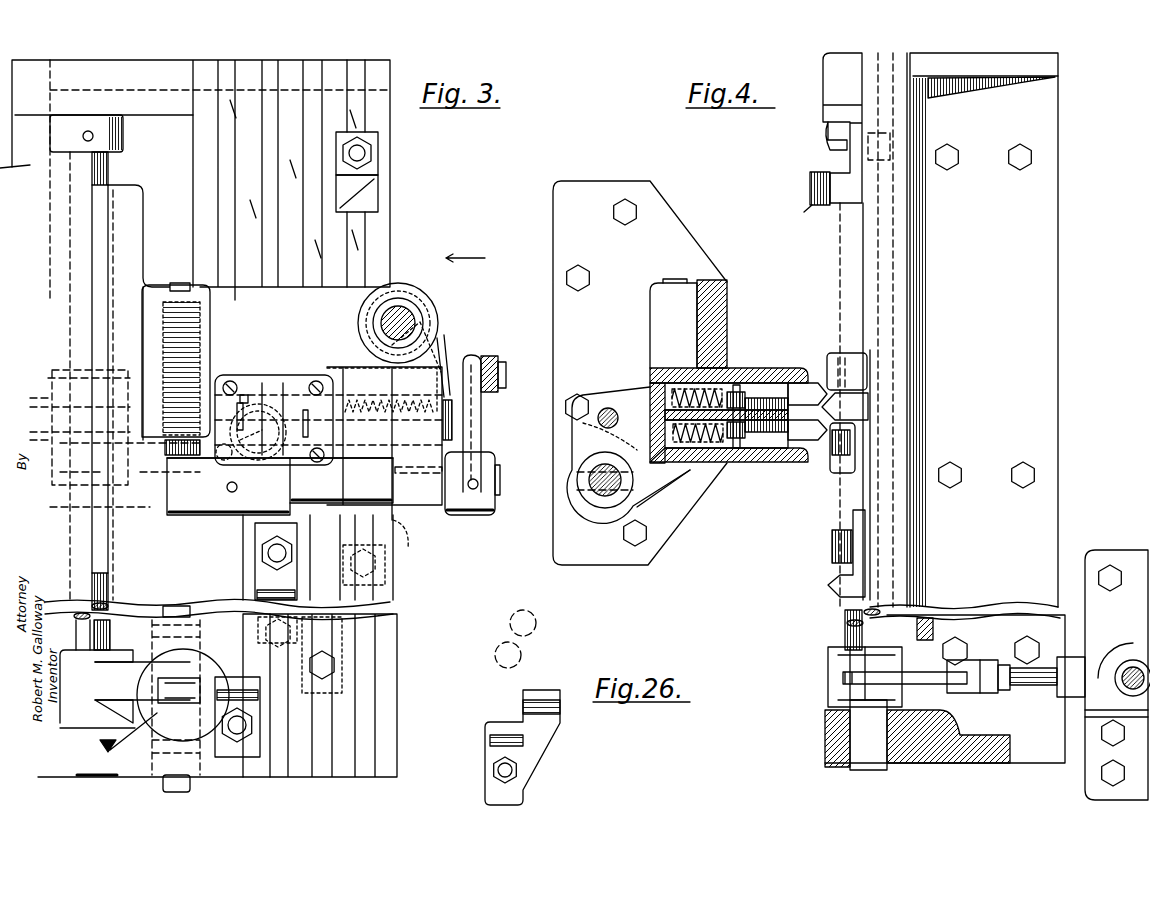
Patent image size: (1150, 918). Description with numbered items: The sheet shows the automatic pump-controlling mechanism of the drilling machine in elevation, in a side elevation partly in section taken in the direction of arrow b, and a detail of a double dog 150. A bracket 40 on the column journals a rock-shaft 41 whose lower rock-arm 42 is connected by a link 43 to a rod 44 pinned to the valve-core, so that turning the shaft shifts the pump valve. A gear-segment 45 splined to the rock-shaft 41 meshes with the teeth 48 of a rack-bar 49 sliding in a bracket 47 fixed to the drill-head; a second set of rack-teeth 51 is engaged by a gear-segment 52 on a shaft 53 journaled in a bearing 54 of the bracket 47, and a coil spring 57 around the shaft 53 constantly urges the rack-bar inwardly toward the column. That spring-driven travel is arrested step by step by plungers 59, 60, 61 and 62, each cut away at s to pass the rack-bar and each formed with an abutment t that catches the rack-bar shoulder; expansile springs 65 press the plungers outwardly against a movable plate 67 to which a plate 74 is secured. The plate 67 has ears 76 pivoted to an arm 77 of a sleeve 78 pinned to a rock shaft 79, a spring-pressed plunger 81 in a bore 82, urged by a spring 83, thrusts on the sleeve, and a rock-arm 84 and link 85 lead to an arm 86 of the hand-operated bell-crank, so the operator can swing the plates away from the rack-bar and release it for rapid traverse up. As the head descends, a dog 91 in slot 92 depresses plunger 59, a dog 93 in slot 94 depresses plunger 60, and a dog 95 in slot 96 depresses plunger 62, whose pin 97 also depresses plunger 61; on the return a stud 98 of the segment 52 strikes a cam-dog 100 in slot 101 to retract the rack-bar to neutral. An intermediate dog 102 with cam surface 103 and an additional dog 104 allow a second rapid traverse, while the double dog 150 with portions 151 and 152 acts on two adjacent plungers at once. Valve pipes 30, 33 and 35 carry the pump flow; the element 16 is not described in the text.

In FIG. 3, the bracket 40 is at (391, 134).
In FIG. 4, the bracket 40 is at (965, 336).
In FIG. 3, the rock-shaft 41 is at (110, 172).
In FIG. 4, the rock-shaft 41 is at (845, 628).
In FIG. 3, the rock-arm 42 is at (125, 689).
In FIG. 4, the rock-arm 42 is at (830, 690).
In FIG. 4, the link 43 is at (958, 694).
In FIG. 4, the rod 44 is at (1037, 688).
In FIG. 3, the gear-segment 45 is at (52, 398).
In FIG. 4, the gear-segment 45 is at (827, 428).
In FIG. 3, the bracket 47 is at (197, 312).
In FIG. 4, the bracket 47 is at (704, 258).
In FIG. 4, the teeth 48 is at (766, 400).
In FIG. 3, the rack-bar 49 is at (483, 425).
In FIG. 3, the rack-teeth 51 is at (389, 443).
In FIG. 3, the gear-segment 52 is at (447, 372).
In FIG. 3, the shaft 53 is at (420, 318).
In FIG. 3, the bearing 54 is at (405, 322).
In FIG. 3, the coil spring 57 is at (430, 322).
In FIG. 3, the plunger 59 is at (297, 360).
In FIG. 4, the plunger 59 is at (807, 394).
In FIG. 26, the plunger 59 is at (537, 623).
In FIG. 3, the plunger 60 is at (263, 462).
In FIG. 4, the plunger 60 is at (807, 430).
In FIG. 3, the plunger 61 is at (268, 360).
In FIG. 3, the plunger 62 is at (222, 462).
In FIG. 4, the expansile springs 65 is at (746, 398).
In FIG. 3, the movable plate 67 is at (283, 372).
In FIG. 4, the movable plate 67 is at (650, 385).
In FIG. 4, the plate 74 is at (681, 369).
In FIG. 3, the ears 76 is at (240, 399).
In FIG. 4, the ears 76 is at (621, 409).
In FIG. 3, the arm 77 is at (260, 468).
In FIG. 4, the arm 77 is at (588, 443).
In FIG. 3, the sleeve 78 is at (228, 497).
In FIG. 4, the sleeve 78 is at (608, 508).
In FIG. 3, the rock shaft 79 is at (341, 480).
In FIG. 3, the spring-pressed plunger 81 is at (166, 450).
In FIG. 4, the spring-pressed plunger 81 is at (684, 281).
In FIG. 3, the bore 82 is at (195, 333).
In FIG. 3, the spring 83 is at (197, 310).
In FIG. 3, the rock-arm 84 is at (495, 450).
In FIG. 3, the link 85 is at (496, 385).
In FIG. 3, the arm 86 is at (197, 488).
In FIG. 4, the arm 86 is at (662, 493).
In FIG. 4, the dog 91 is at (845, 406).
In FIG. 3, the slot 92 is at (325, 707).
In FIG. 3, the dog 93 is at (258, 583).
In FIG. 4, the dog 93 is at (828, 592).
In FIG. 3, the slot 94 is at (283, 770).
In FIG. 3, the dog 95 is at (213, 692).
In FIG. 3, the slot 96 is at (237, 770).
In FIG. 3, the pin 97 is at (237, 417).
In FIG. 3, the slot 16 is at (308, 437).
In FIG. 3, the stud 98 is at (355, 372).
In FIG. 3, the cam-dog 100 is at (379, 199).
In FIG. 4, the cam-dog 100 is at (808, 205).
In FIG. 3, the slot 101 is at (360, 242).
In FIG. 3, the dog 102 is at (386, 575).
In FIG. 3, the cam surface 103 is at (397, 540).
In FIG. 3, the dog 104 is at (348, 646).
In FIG. 3, the pipe 33 is at (176, 605).
In FIG. 3, the pipe 35 is at (185, 793).
In FIG. 4, the pipe 35 is at (1127, 662).
In FIG. 26, the outlet pipe 30 is at (521, 655).
In FIG. 26, the double dog 150 is at (535, 760).
In FIG. 26, the portion 151 is at (551, 698).
In FIG. 26, the portion 152 is at (511, 734).
In FIG. 3, the arrow b is at (465, 250).
In FIG. 4, the cut-away channel s is at (790, 438).
In FIG. 4, the abutment t is at (735, 433).